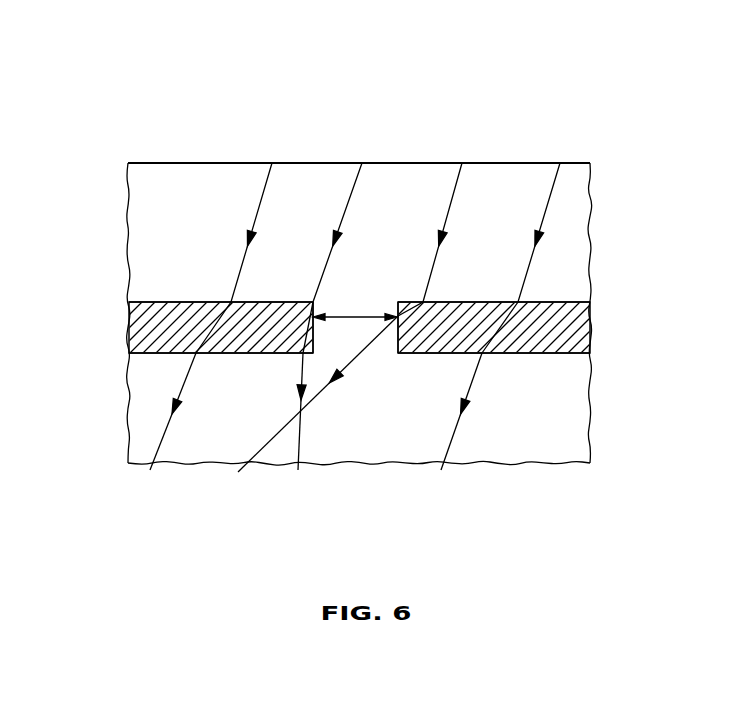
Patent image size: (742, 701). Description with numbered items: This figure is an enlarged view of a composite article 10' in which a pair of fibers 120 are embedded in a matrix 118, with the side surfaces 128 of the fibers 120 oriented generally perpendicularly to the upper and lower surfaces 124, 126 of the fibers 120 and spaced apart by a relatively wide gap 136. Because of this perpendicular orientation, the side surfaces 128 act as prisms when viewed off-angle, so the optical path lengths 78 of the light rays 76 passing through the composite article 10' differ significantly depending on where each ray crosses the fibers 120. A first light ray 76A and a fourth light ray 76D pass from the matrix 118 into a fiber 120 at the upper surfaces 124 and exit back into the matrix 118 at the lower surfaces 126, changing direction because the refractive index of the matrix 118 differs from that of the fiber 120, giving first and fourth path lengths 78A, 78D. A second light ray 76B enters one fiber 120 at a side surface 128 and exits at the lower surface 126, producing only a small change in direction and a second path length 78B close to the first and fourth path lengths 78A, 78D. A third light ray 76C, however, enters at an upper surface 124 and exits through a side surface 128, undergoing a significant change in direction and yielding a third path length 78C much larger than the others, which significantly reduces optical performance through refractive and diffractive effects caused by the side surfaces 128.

The composite article 10' is at (341, 147).
The light rays 76 is at (240, 272).
The first light ray 76A is at (267, 182).
The second light ray 76B is at (357, 182).
The third light ray 76C is at (456, 182).
The fourth light ray 76D is at (554, 182).
The optical path lengths 78 is at (478, 378).
The first path length 78A is at (157, 452).
The second path length 78B is at (298, 455).
The third path length 78C is at (263, 450).
The fourth path length 78D is at (445, 450).
The matrix 118 is at (573, 440).
The fibers 120 is at (140, 327).
The upper surfaces 124 is at (150, 302).
The lower surfaces 126 is at (150, 355).
The side surfaces 128 is at (397, 303).
The gap 136 is at (350, 316).